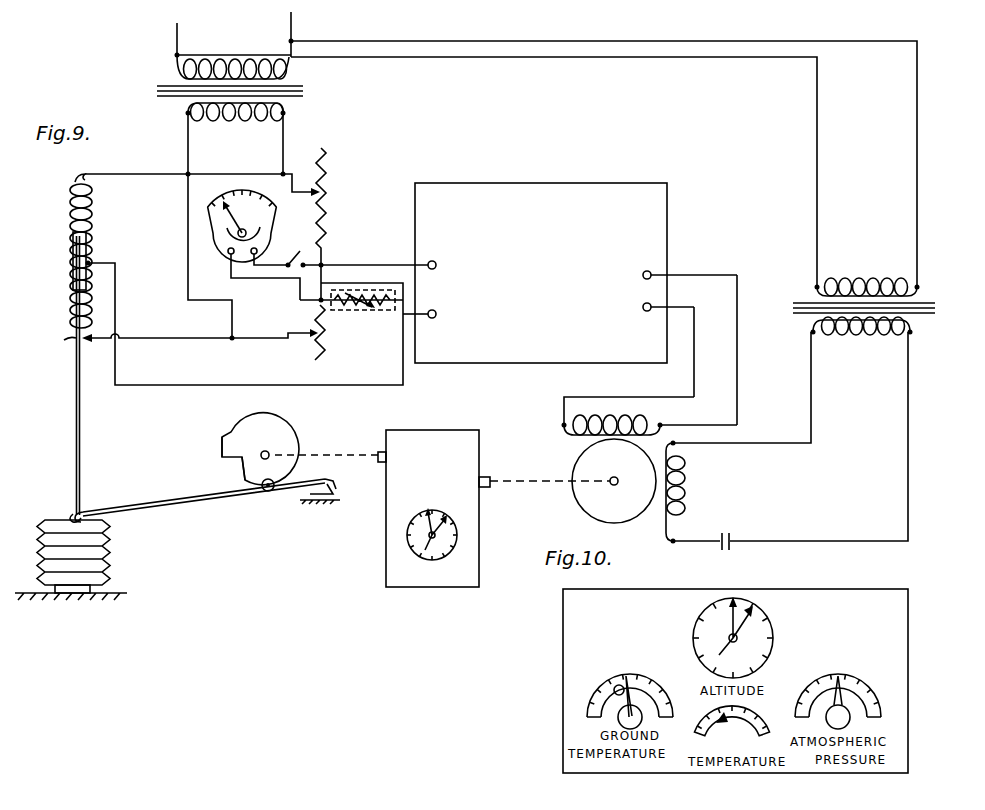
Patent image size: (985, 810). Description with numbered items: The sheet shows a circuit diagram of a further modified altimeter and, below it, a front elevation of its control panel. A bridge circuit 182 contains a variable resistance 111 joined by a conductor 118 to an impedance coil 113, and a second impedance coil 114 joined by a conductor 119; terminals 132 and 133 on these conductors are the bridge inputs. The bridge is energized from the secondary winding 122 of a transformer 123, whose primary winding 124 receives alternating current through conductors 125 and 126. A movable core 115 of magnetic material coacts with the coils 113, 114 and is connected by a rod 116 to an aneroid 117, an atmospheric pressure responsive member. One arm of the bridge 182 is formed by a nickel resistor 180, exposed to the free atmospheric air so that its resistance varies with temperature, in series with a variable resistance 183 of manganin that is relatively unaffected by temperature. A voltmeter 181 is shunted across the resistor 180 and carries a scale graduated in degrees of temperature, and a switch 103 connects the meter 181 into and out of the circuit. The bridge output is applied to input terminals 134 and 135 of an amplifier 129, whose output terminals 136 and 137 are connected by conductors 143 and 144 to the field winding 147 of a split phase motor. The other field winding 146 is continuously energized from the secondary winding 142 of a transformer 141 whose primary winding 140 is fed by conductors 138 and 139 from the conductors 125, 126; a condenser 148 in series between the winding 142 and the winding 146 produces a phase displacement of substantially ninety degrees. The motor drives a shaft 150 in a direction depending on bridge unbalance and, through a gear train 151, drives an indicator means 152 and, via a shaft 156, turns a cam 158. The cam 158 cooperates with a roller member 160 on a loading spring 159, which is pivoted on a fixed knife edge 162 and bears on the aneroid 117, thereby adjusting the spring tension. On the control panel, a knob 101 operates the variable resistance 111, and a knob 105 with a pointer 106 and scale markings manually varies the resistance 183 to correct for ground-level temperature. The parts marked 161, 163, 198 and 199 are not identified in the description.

In FIG. 10, the knob 101 is at (845, 724).
In FIG. 9, the switch 103 is at (296, 258).
In FIG. 10, the knob 105 is at (620, 716).
In FIG. 10, the pointer 106 is at (618, 690).
In FIG. 9, the variable resistance 111 is at (323, 206).
In FIG. 9, the impedance coil 113 is at (70, 207).
In FIG. 9, the impedance coil 114 is at (70, 302).
In FIG. 9, the movable core 115 is at (72, 248).
In FIG. 9, the rod 116 is at (75, 434).
In FIG. 9, the aneroid 117 is at (110, 552).
In FIG. 9, the conductor 118 is at (155, 173).
In FIG. 9, the conductor 119 is at (144, 338).
In FIG. 9, the secondary winding 122 is at (283, 108).
In FIG. 9, the transformer 123 is at (297, 86).
In FIG. 9, the primary winding 124 is at (177, 70).
In FIG. 9, the conductor 125 is at (176, 33).
In FIG. 9, the conductor 126 is at (290, 28).
In FIG. 9, the amplifier 129 is at (650, 220).
In FIG. 9, the terminal 132 is at (282, 173).
In FIG. 9, the terminal 133 is at (234, 340).
In FIG. 9, the input terminal 134 is at (434, 269).
In FIG. 9, the input terminal 135 is at (434, 318).
In FIG. 9, the output terminal 136 is at (644, 274).
In FIG. 9, the output terminal 137 is at (645, 310).
In FIG. 9, the conductor 138 is at (818, 130).
In FIG. 9, the conductor 139 is at (918, 138).
In FIG. 9, the primary winding 140 is at (872, 279).
In FIG. 9, the transformer 141 is at (927, 318).
In FIG. 9, the secondary winding 142 is at (867, 335).
In FIG. 9, the conductor 143 is at (738, 380).
In FIG. 9, the conductor 144 is at (694, 352).
In FIG. 9, the field winding 146 is at (683, 499).
In FIG. 9, the field winding 147 is at (650, 420).
In FIG. 9, the condenser 148 is at (731, 535).
In FIG. 9, the shaft 150 is at (488, 478).
In FIG. 9, the gear train 151 is at (460, 440).
In FIG. 9, the indicator means 152 is at (458, 540).
In FIG. 10, the indicator means 152 is at (770, 633).
In FIG. 9, the shaft 156 is at (378, 452).
In FIG. 9, the cam 158 is at (248, 428).
In FIG. 9, the loading spring 159 is at (152, 503).
In FIG. 9, the roller member 160 is at (272, 492).
In FIG. 9, the cam follower surface 161 is at (244, 462).
In FIG. 9, the fixed knife edge 162 is at (327, 486).
In FIG. 9, the cam surface 163 is at (222, 450).
In FIG. 9, the resistor 180 is at (357, 302).
In FIG. 9, the voltmeter 181 is at (225, 246).
In FIG. 10, the voltmeter 181 is at (708, 718).
In FIG. 9, the bridge circuit 182 is at (154, 225).
In FIG. 9, the variable resistance 183 is at (324, 350).
In FIG. 9, the coil tap 198 is at (72, 178).
In FIG. 9, the coil tap 199 is at (58, 338).